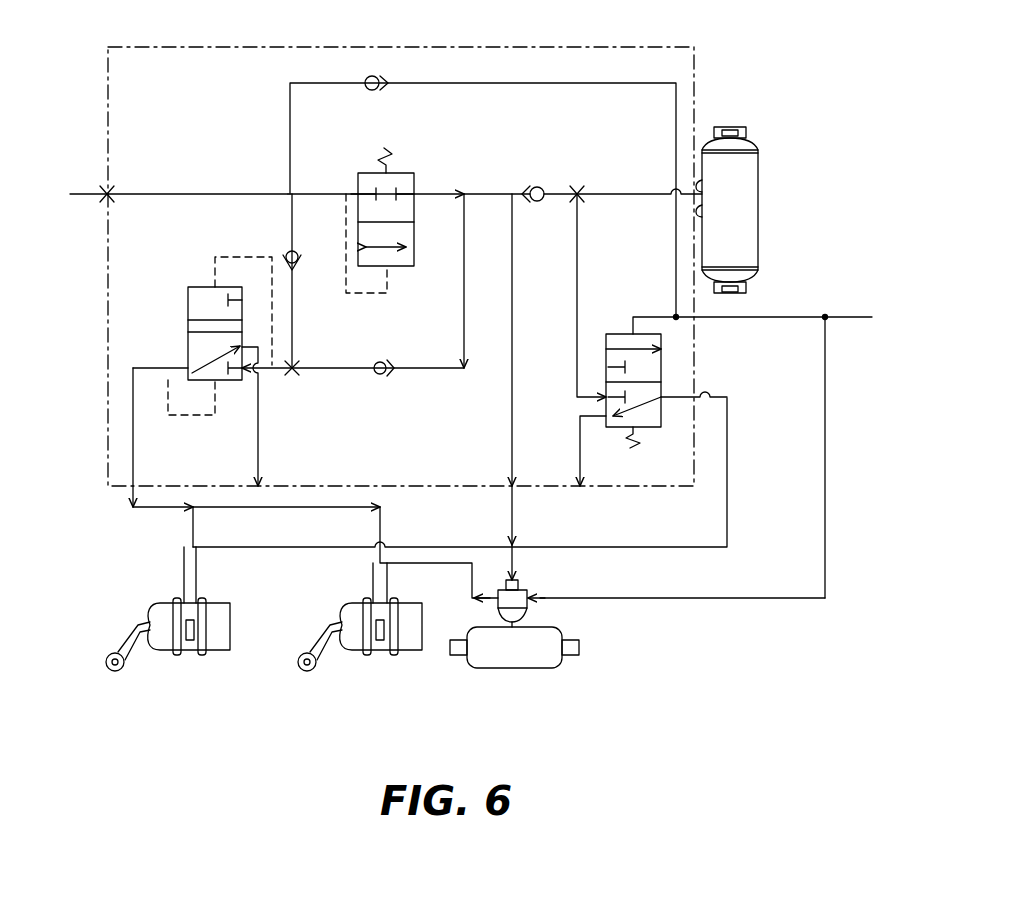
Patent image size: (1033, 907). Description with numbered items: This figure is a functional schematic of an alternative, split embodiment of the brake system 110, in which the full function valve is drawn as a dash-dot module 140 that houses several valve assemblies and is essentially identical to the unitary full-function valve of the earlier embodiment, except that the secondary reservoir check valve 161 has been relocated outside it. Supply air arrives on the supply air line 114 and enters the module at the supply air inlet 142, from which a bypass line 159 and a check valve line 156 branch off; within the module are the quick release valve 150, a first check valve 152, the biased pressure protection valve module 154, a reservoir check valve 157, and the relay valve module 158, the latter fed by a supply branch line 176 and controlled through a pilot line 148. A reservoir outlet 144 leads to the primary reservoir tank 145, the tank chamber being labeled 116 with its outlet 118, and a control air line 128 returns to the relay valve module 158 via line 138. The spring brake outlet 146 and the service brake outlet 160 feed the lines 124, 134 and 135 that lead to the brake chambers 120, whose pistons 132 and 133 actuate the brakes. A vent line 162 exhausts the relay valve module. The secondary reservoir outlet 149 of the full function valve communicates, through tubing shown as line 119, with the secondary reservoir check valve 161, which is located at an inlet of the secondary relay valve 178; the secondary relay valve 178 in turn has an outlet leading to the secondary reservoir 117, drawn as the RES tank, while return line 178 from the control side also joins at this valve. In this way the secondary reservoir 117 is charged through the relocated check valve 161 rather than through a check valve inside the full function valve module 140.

The brake control system 110 is at (722, 90).
The supply line 114 is at (95, 190).
The fluid reservoir tank 116 is at (725, 201).
The secondary reservoir 117 is at (513, 670).
The tank outlet 118 is at (718, 225).
The drain line 119 is at (508, 520).
The brake cylinder 120 is at (160, 612).
The branch line 124 is at (163, 510).
The return line 128 is at (782, 318).
The brake piston 132 is at (190, 650).
The brake piston 133 is at (384, 648).
The brake supply line 134 is at (290, 547).
The brake supply line 135 is at (455, 563).
The return line 138 is at (825, 498).
The control module 140 is at (108, 335).
The junction 142 is at (110, 190).
The tank line 144 is at (705, 317).
The accumulator tank 145 is at (738, 160).
The outlet line 146 is at (130, 497).
The pilot line 148 is at (712, 395).
The outlet 149 is at (508, 490).
The control valve 150 is at (188, 312).
The check valve 152 is at (380, 376).
The pressure relief valve 154 is at (414, 178).
The check valve 156 is at (290, 248).
The check valve 157 is at (537, 186).
The control valve 158 is at (617, 333).
The check valve bypass line 159 is at (370, 90).
The outlet line 160 is at (258, 486).
The secondary reservoir check valve 161 is at (520, 588).
The vent line 162 is at (580, 488).
The supply branch line 176 is at (575, 322).
The secondary relay valve 178 is at (548, 604).